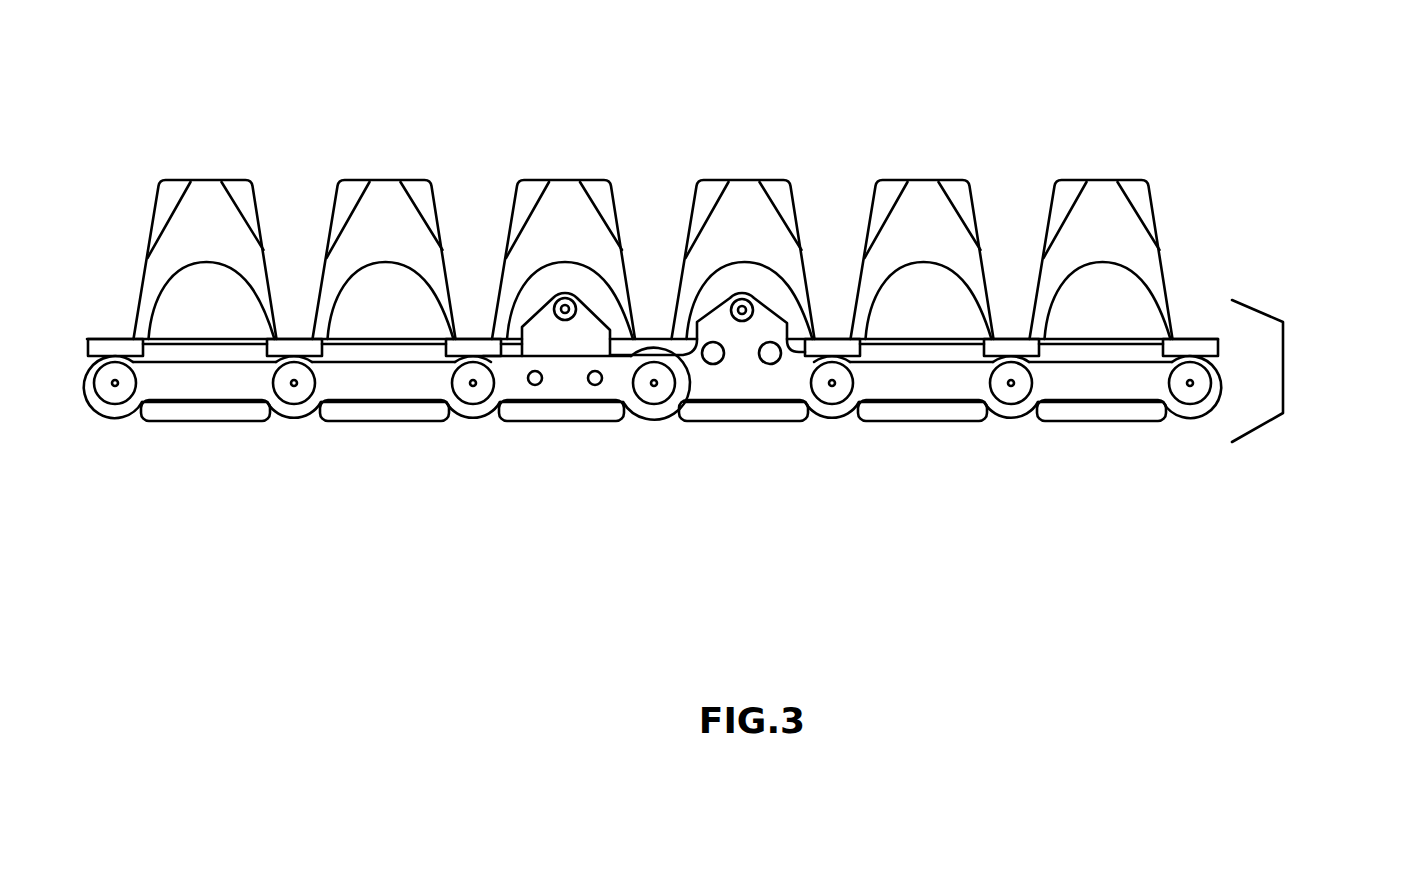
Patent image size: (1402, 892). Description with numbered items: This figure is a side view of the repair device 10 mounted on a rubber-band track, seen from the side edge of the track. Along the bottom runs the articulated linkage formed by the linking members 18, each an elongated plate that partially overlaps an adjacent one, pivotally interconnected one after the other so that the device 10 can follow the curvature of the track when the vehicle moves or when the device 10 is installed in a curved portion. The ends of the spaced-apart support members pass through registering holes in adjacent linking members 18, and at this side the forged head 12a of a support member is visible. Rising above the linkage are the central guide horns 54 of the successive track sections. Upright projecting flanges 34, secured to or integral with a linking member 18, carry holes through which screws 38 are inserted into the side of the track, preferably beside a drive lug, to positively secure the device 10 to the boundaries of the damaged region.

The device 10 is at (1283, 367).
The forged head 12a is at (471, 390).
The linking member 18 is at (213, 382).
The upright projecting flange 34 is at (577, 330).
The screw 38 is at (713, 353).
The central guide horn 54 is at (207, 225).